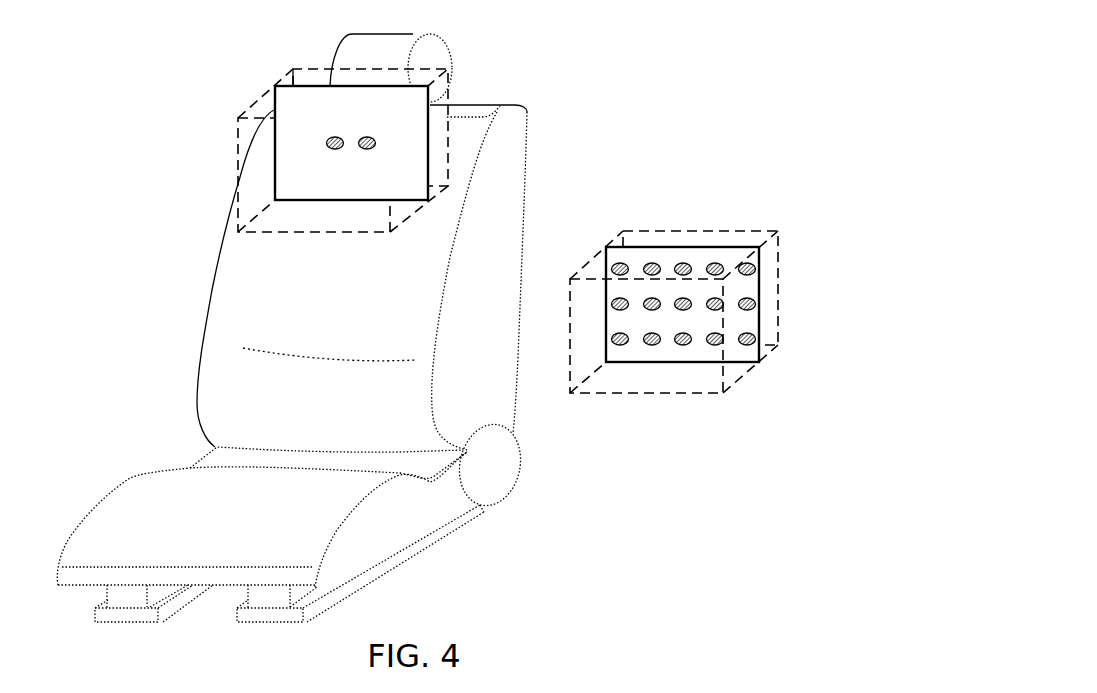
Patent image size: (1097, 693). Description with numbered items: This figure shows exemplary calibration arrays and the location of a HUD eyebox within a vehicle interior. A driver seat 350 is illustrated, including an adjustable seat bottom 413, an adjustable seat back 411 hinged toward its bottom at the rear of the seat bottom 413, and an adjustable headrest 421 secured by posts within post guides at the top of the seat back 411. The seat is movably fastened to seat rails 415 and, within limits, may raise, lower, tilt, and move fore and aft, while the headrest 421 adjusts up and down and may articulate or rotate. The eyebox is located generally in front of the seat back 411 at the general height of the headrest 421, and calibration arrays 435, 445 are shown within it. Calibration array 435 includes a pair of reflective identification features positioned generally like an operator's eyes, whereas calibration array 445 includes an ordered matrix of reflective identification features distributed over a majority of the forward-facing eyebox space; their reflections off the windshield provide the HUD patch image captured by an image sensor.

The driver seat 350 is at (289, 331).
The seat back 411 is at (233, 312).
The seat bottom 413 is at (150, 495).
The seat rails 415 is at (107, 622).
The headrest 421 is at (427, 52).
The calibration array 435 is at (335, 183).
The calibration array 445 is at (665, 347).